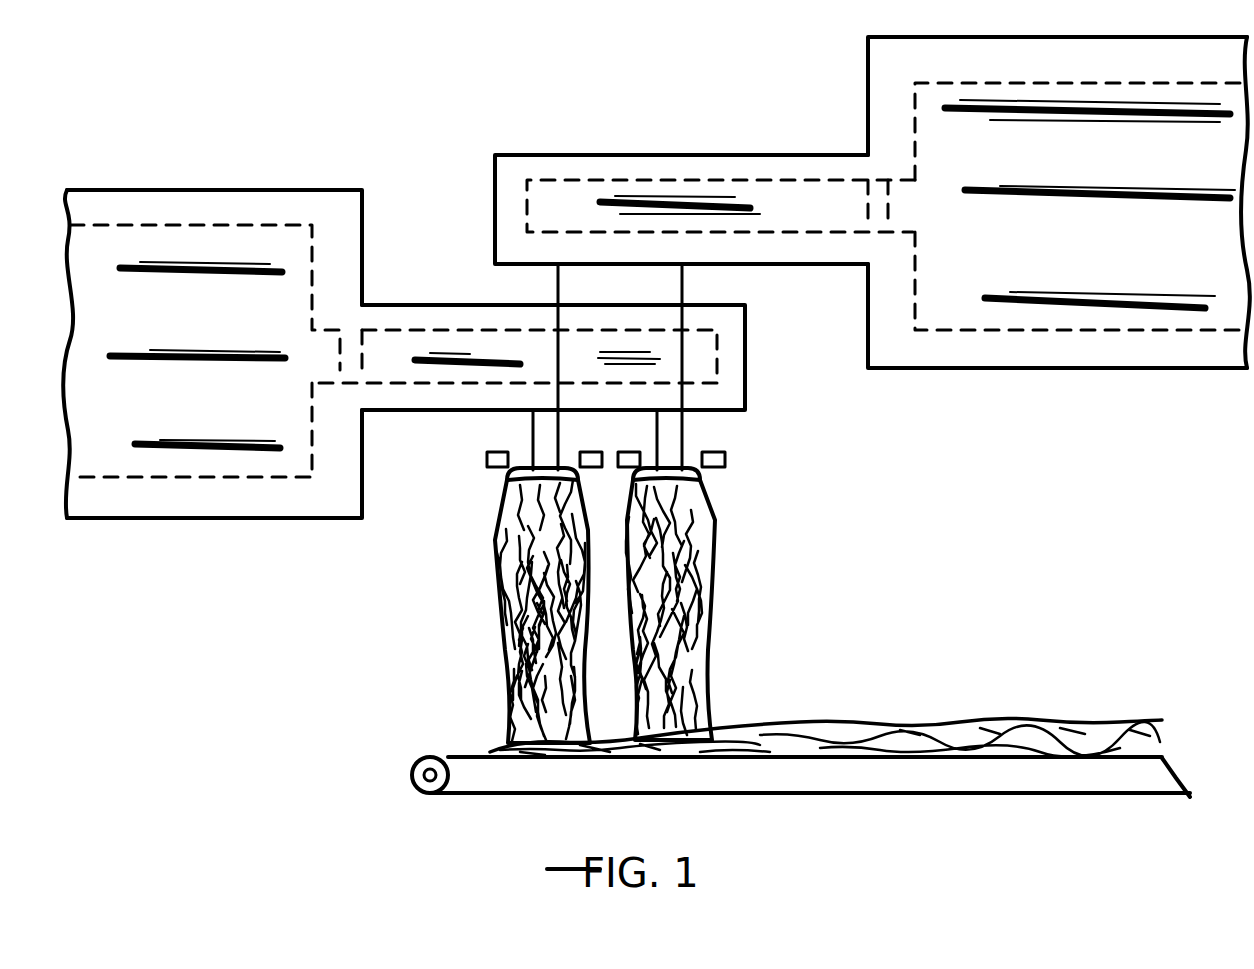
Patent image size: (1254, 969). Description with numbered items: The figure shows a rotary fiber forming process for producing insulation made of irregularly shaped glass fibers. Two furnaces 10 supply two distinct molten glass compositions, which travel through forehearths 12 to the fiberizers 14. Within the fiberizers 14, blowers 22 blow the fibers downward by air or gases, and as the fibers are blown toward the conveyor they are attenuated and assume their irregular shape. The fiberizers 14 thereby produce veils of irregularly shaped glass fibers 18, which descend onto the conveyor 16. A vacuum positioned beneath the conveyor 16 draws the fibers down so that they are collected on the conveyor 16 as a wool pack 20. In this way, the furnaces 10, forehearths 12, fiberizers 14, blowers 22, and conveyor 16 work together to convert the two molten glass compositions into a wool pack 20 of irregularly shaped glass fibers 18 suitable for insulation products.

The furnace 10 is at (225, 190).
The forehearth 12 is at (412, 305).
The fiberizer 14 is at (692, 456).
The conveyor 16 is at (458, 756).
The veils of irregularly shaped glass fibers 18 is at (496, 571).
The wool pack 20 is at (815, 722).
The blower 22 is at (484, 460).